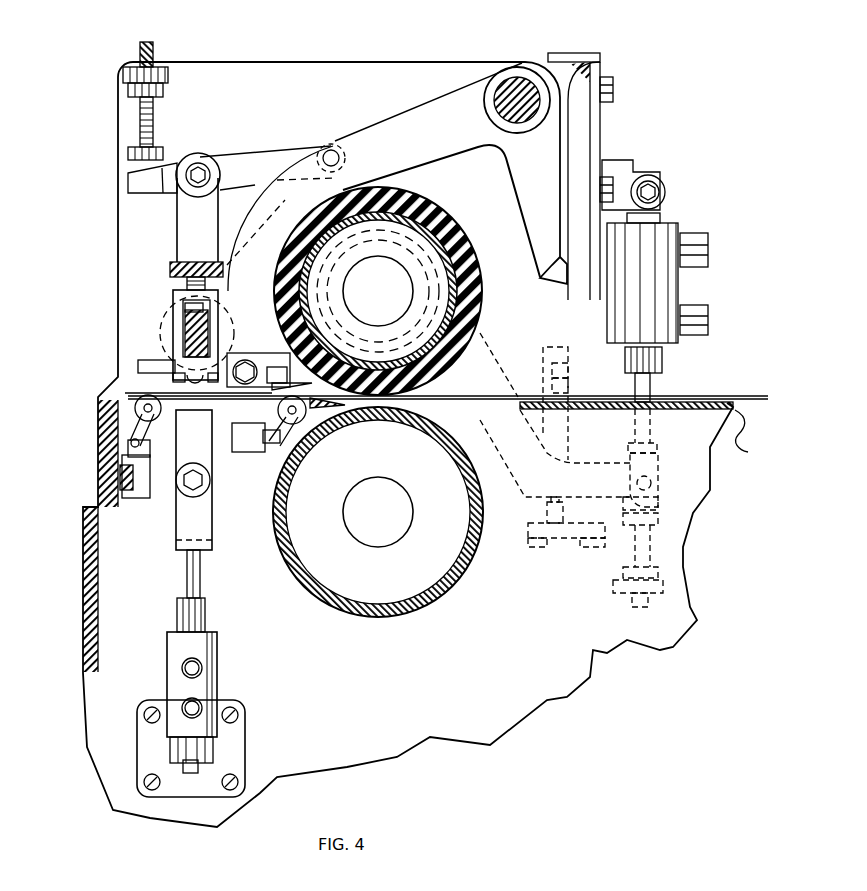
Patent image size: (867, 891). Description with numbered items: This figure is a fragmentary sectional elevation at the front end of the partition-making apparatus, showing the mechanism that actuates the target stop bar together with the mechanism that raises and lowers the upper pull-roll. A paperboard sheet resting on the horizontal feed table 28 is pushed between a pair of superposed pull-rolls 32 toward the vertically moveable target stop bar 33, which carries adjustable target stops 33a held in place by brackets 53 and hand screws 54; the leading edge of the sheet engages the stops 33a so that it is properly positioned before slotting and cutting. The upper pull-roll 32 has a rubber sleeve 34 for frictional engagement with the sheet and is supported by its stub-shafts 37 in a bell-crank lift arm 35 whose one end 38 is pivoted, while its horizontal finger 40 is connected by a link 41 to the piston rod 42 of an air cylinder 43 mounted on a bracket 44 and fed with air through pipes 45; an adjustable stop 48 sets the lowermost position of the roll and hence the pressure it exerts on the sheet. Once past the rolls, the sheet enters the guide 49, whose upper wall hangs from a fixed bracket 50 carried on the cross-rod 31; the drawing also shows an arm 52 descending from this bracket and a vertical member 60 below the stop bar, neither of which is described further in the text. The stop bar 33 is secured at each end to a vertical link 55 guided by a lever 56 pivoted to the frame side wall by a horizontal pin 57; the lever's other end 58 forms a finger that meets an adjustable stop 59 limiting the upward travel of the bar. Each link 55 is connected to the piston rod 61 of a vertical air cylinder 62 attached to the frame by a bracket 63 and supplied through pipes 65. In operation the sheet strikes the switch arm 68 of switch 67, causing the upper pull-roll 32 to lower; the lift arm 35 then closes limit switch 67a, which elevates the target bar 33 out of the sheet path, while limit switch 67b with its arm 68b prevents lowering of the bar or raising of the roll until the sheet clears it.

The horizontal feed table 28 is at (710, 403).
The cross-rod 31 is at (510, 88).
The pull-rolls 32 is at (440, 175).
The target stop bar 33 is at (165, 300).
The target stops 33a is at (152, 362).
The sleeve 34 is at (478, 278).
The lift arms 35 is at (480, 333).
The stub-shafts 37 is at (390, 273).
The end of lift arm 38 is at (263, 263).
The horizontal finger 40 is at (577, 470).
The link 41 is at (645, 477).
The piston rod 42 is at (650, 390).
The air cylinder 43 is at (668, 237).
The bracket 44 is at (613, 167).
The pipes 45 is at (702, 312).
The adjustable stop 48 is at (647, 540).
The guide 49 is at (128, 394).
The fixed bracket 50 is at (458, 93).
The arm 52 is at (522, 193).
The brackets 53 is at (177, 287).
The hand screws 54 is at (187, 258).
The vertical links 55 is at (185, 228).
The levers 56 is at (260, 158).
The horizontal pin 57 is at (331, 155).
The lever end 58 is at (140, 182).
The adjustable stop 59 is at (140, 120).
The vertical bar 60 is at (200, 454).
The piston rod 61 is at (187, 592).
The vertical air cylinder 62 is at (212, 690).
The bracket 63 is at (237, 748).
The pipes 65 is at (182, 705).
The switch 67 is at (235, 452).
The limit switch 67a is at (573, 530).
The limit switch 67b is at (133, 498).
The switch arm 68 is at (298, 422).
The arm 68b is at (138, 427).